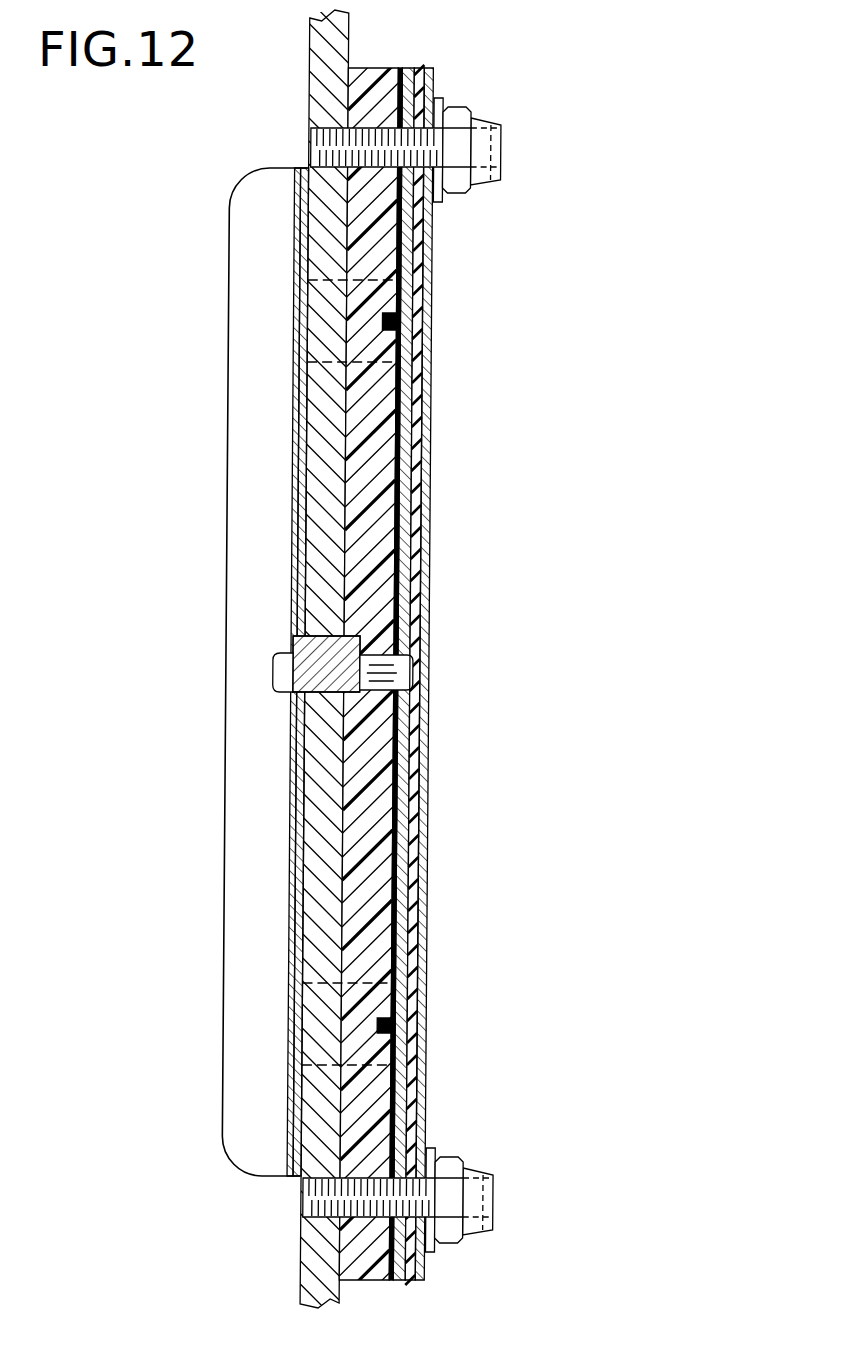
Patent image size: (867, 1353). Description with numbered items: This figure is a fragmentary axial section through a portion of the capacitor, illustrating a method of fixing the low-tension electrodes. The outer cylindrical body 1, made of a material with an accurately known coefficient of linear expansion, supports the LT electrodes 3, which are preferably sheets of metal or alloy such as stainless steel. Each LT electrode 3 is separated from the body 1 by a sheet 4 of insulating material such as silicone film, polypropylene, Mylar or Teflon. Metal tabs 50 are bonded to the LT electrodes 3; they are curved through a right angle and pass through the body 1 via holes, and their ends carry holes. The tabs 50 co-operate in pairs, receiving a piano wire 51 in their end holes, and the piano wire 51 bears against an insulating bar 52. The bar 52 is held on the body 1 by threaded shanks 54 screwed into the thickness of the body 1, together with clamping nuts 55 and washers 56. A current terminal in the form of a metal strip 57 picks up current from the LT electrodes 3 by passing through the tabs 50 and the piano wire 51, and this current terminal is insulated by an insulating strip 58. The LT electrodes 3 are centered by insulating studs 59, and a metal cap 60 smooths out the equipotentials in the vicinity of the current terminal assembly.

The outer cylindrical body 1 is at (335, 60).
The LT electrode 3 is at (300, 565).
The sheet of insulating material 4 is at (297, 498).
The metal tab 50 is at (372, 281).
The piano wire 51 is at (400, 334).
The insulating bar 52 is at (388, 496).
The threaded shank 54 is at (320, 137).
The clamping nut 55 is at (500, 119).
The washer 56 is at (441, 201).
The metal strip 57 is at (428, 436).
The insulating strip 58 is at (427, 388).
The insulating stud 59 is at (275, 669).
The metal cap 60 is at (432, 240).